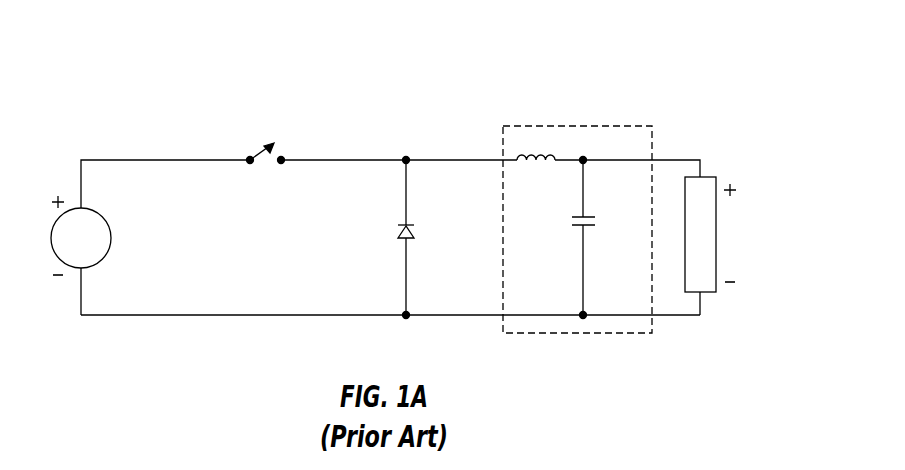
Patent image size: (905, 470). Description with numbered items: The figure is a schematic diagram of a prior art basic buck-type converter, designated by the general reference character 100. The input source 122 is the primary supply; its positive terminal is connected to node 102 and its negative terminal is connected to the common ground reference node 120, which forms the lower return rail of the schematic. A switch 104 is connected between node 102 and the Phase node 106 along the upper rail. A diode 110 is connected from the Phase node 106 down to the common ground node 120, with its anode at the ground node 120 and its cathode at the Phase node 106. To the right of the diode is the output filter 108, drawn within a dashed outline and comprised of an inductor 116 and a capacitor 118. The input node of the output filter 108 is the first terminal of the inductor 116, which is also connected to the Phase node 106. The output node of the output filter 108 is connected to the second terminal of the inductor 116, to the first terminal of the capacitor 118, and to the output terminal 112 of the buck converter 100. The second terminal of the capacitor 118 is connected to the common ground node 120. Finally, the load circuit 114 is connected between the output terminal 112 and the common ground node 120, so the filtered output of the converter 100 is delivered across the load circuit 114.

The buck-type converter 100 is at (635, 55).
The node 102 is at (108, 160).
The switch 104 is at (260, 155).
The Phase node 106 is at (378, 160).
The output filter 108 is at (608, 126).
The diode 110 is at (414, 232).
The output terminal 112 is at (700, 160).
The load circuit 114 is at (716, 257).
The inductor 116 is at (537, 162).
The capacitor 118 is at (577, 227).
The common ground reference node 120 is at (220, 315).
The input source 122 is at (110, 245).